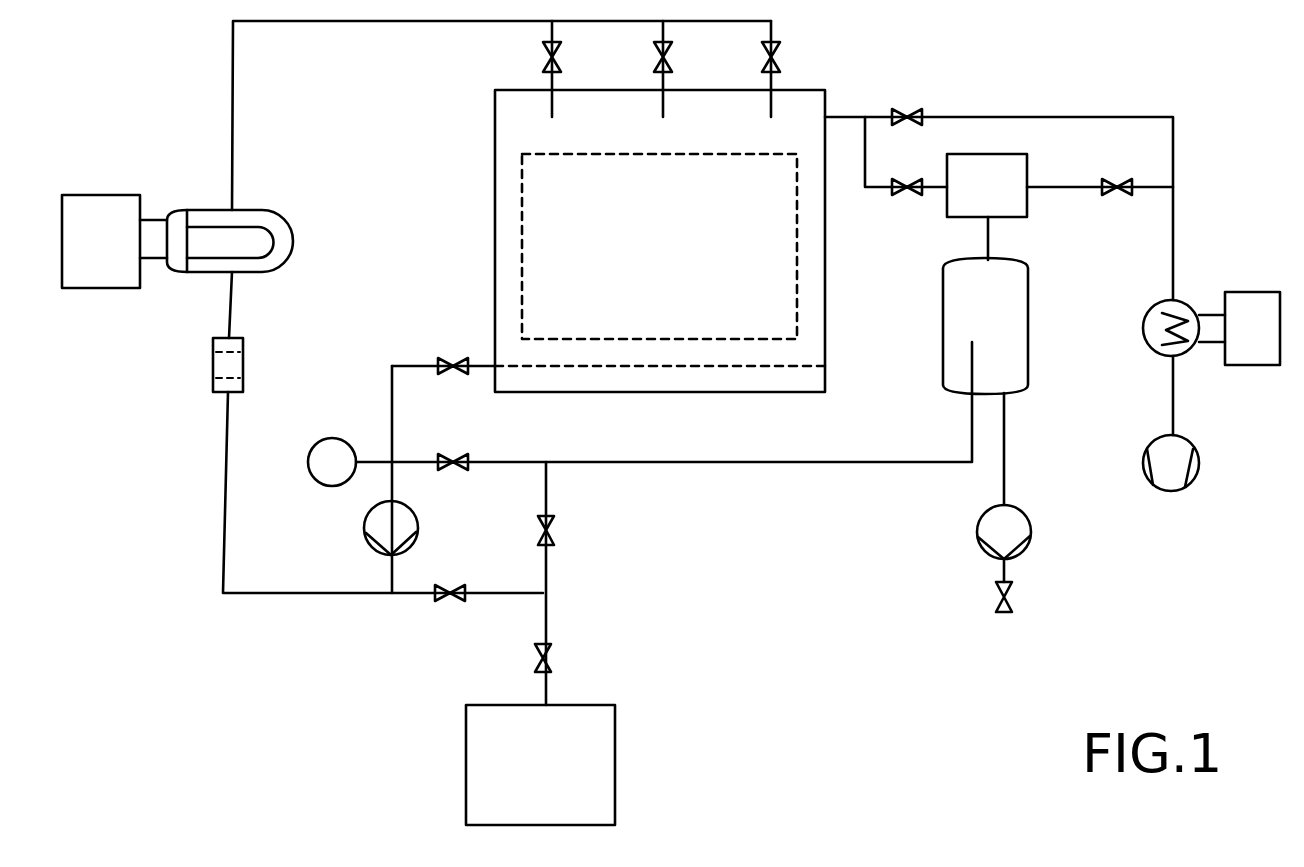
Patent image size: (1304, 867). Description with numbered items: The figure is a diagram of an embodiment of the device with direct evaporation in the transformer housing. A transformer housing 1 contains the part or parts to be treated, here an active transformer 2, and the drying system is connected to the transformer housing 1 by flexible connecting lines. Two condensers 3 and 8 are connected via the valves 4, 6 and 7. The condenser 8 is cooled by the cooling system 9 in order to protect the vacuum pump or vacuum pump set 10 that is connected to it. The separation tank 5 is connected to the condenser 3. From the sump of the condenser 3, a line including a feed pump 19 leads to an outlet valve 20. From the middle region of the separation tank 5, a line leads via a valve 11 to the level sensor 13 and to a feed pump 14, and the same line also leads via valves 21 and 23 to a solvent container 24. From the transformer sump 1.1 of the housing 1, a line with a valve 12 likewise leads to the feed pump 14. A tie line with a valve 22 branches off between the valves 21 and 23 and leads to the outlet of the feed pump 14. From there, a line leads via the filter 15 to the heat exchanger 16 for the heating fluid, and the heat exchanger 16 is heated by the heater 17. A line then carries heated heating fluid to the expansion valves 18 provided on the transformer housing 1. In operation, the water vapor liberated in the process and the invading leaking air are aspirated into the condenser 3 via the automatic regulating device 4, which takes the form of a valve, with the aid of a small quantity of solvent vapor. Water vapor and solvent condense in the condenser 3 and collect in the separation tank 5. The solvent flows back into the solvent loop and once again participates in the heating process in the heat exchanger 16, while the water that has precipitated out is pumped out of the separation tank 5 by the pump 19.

The transformer housing 1 is at (495, 175).
The transformer sump 1.1 is at (655, 392).
The active transformer 2 is at (518, 275).
The condenser 3 is at (1015, 203).
The valve 4 is at (907, 197).
The separation tank 5 is at (1013, 333).
The valve 6 is at (1110, 198).
The valve 7 is at (907, 108).
The condenser 8 is at (1143, 330).
The cooling system 9 is at (1258, 300).
The vacuum pump 10 is at (1145, 466).
The valve 11 is at (450, 455).
The valve 12 is at (450, 358).
The level sensor 13 is at (316, 480).
The feed pump 14 is at (368, 523).
The filter 15 is at (240, 363).
The heat exchanger 16 is at (255, 210).
The heater 17 is at (87, 200).
The expansion valves 18 is at (545, 55).
The feed pump 19 is at (1022, 532).
The outlet valve 20 is at (1012, 596).
The valve 21 is at (537, 530).
The valve 22 is at (449, 601).
The valve 23 is at (535, 660).
The solvent container 24 is at (587, 717).